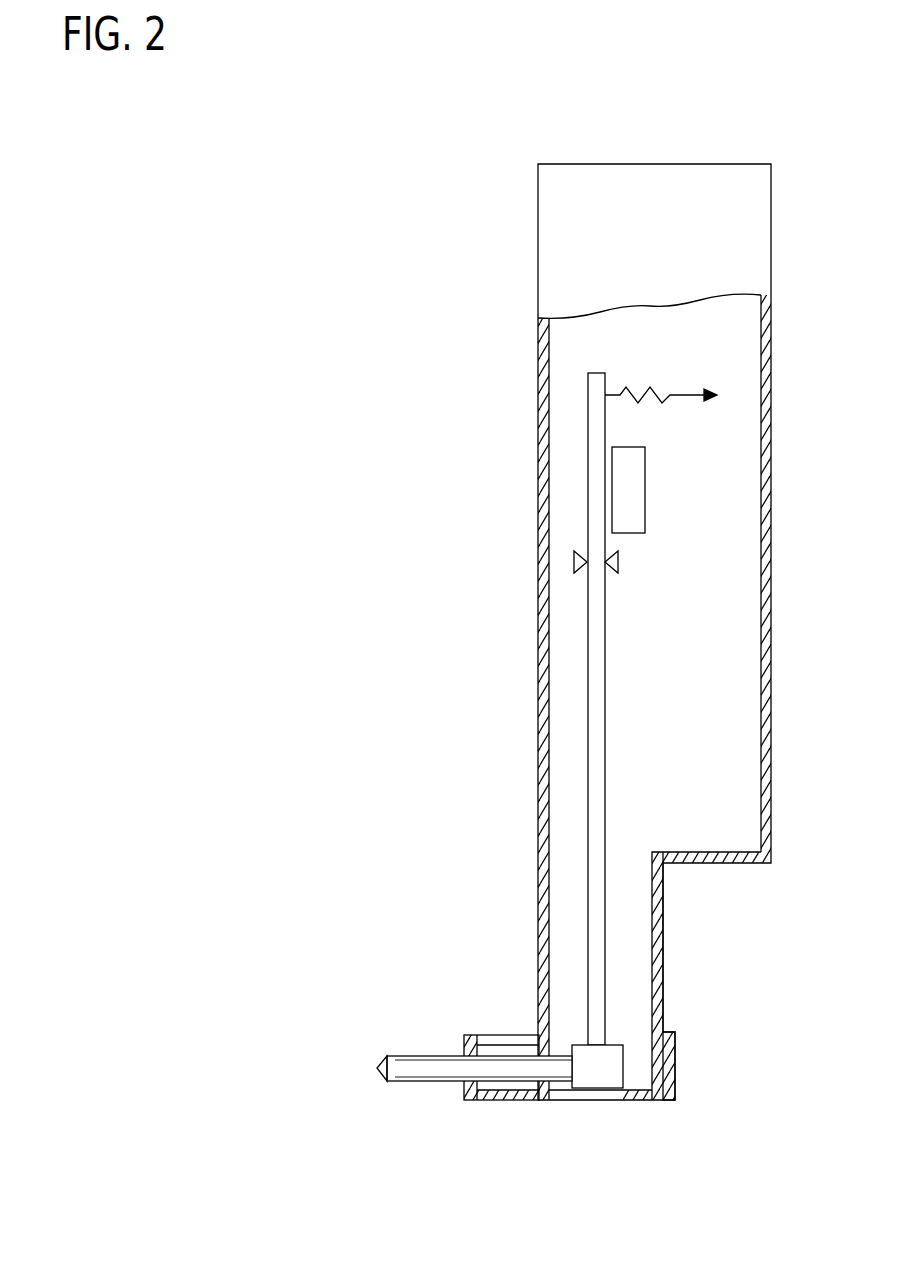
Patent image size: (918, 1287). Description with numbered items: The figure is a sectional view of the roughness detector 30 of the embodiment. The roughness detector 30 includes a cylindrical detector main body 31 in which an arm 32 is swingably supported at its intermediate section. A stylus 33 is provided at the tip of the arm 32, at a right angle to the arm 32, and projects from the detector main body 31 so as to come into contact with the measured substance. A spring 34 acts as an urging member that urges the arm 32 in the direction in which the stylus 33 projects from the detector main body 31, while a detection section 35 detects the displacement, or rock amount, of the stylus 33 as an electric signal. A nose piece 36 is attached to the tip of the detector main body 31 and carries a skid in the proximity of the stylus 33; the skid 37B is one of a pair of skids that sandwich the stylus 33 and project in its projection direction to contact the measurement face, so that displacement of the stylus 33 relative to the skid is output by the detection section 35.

The roughness detector 30 is at (386, 264).
The detector main body 31 is at (538, 278).
The arm 32 is at (605, 746).
The stylus 33 is at (430, 1083).
The spring 34 is at (659, 393).
The detection section 35 is at (645, 490).
The nose piece 36 is at (676, 1078).
The skid 37B is at (435, 1055).